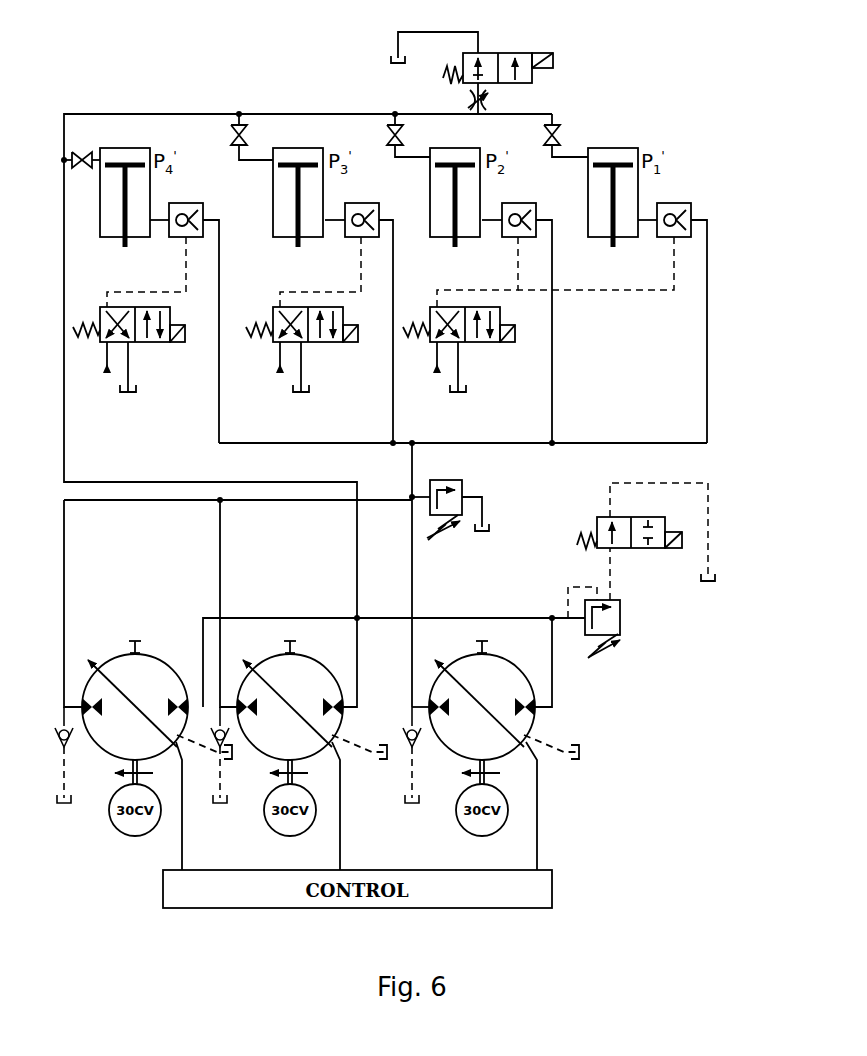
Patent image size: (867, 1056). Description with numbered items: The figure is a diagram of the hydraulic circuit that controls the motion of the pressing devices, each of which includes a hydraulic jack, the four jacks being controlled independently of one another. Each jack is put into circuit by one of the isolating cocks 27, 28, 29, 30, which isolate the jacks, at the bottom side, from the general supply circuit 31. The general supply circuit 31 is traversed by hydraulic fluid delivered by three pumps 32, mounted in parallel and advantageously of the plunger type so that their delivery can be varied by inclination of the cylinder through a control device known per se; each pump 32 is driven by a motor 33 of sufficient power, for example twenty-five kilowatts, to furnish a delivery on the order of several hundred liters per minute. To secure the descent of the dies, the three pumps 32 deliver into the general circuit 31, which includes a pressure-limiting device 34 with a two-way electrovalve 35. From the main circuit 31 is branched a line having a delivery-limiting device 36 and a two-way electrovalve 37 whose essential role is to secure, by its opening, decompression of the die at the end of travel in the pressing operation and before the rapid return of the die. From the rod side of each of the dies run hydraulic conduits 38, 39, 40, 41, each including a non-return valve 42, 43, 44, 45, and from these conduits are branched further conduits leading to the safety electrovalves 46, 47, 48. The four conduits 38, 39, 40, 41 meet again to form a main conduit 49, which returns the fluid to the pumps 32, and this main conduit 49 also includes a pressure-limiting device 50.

The isolating cock 27 is at (562, 135).
The isolating cock 28 is at (404, 134).
The isolating cock 29 is at (250, 137).
The isolating cock 30 is at (86, 153).
The general supply circuit 31 is at (94, 478).
The pump 32 is at (147, 662).
The motor 33 is at (143, 831).
The pressure-limiting device 34 is at (614, 598).
The two-way electrovalve 35 is at (656, 551).
The delivery-limiting device 36 is at (466, 100).
The two-way electrovalve 37 is at (441, 76).
The hydraulic conduit 38 is at (710, 241).
The hydraulic conduit 39 is at (555, 241).
The hydraulic conduit 40 is at (396, 243).
The hydraulic conduit 41 is at (222, 243).
The non-return valve 42 is at (680, 201).
The non-return valve 43 is at (521, 203).
The non-return valve 44 is at (366, 203).
The non-return valve 45 is at (188, 203).
The safety electrovalve 46 is at (494, 346).
The safety electrovalve 47 is at (331, 346).
The safety electrovalve 48 is at (157, 346).
The main conduit 49 is at (408, 458).
The pressure-limiting device 50 is at (462, 480).